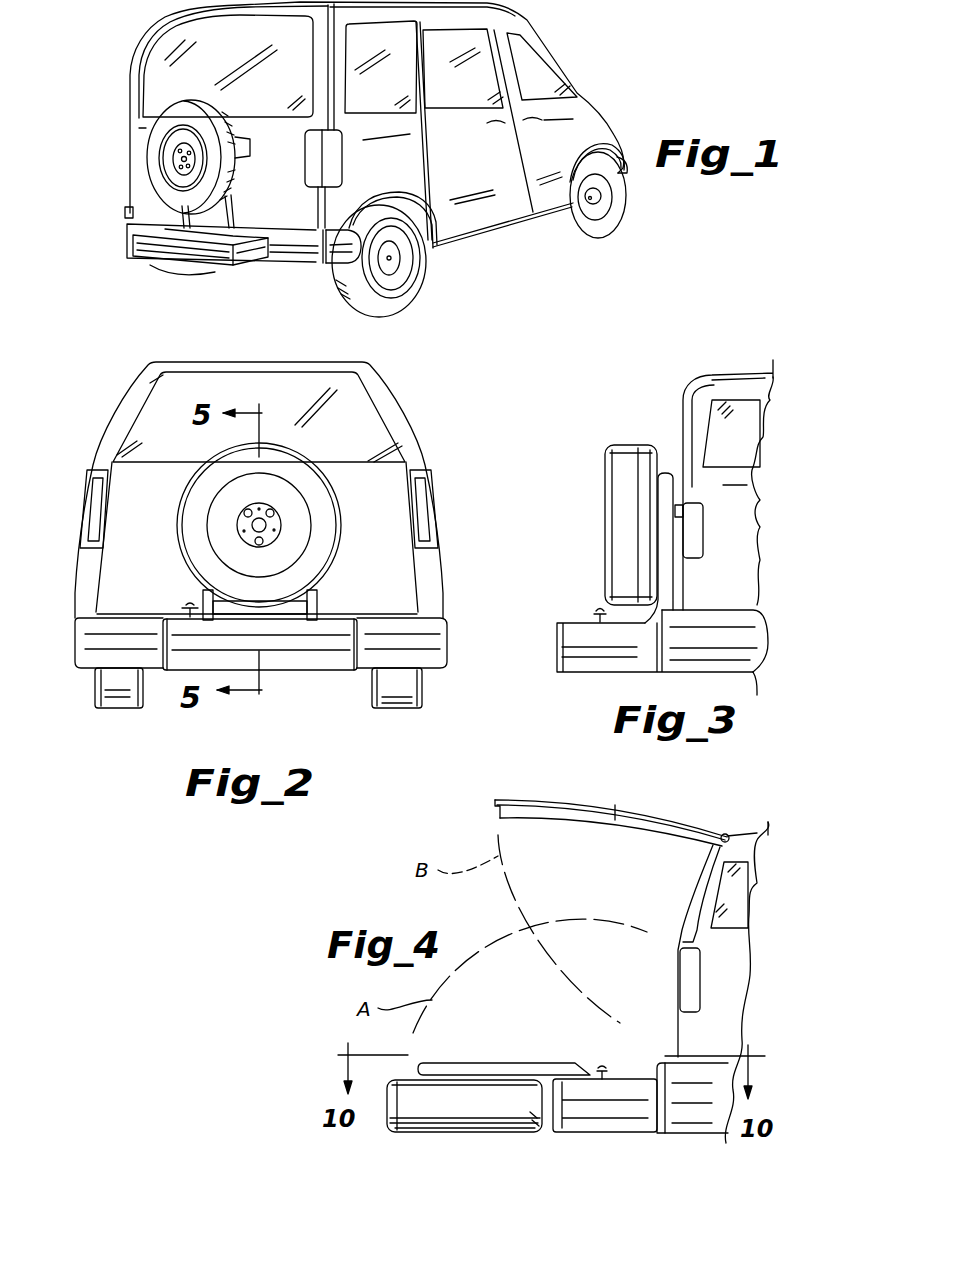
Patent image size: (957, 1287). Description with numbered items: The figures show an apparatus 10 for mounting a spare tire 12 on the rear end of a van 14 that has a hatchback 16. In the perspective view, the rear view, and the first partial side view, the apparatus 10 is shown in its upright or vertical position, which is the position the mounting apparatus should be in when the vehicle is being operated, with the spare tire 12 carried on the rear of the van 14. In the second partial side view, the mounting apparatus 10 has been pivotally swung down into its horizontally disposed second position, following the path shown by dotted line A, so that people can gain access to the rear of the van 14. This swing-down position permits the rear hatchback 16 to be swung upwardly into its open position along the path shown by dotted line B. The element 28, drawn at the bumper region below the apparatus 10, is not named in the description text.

In FIG. 1, the spare tire carrier bracket 10 is at (247, 233).
In FIG. 2, the spare tire carrier bracket 10 is at (315, 600).
In FIG. 3, the spare tire carrier bracket 10 is at (663, 473).
In FIG. 4, the spare tire carrier bracket 10 is at (513, 1063).
In FIG. 1, the spare tire 12 is at (147, 175).
In FIG. 2, the spare tire 12 is at (337, 520).
In FIG. 3, the spare tire 12 is at (617, 500).
In FIG. 4, the spare tire 12 is at (422, 1117).
In FIG. 1, the vehicle (van) 14 is at (565, 68).
In FIG. 2, the vehicle (van) 14 is at (420, 443).
In FIG. 3, the vehicle (van) 14 is at (743, 539).
In FIG. 4, the vehicle (van) 14 is at (720, 963).
In FIG. 1, the rear lift gate 16 is at (126, 122).
In FIG. 2, the rear lift gate 16 is at (147, 573).
In FIG. 4, the rear lift gate 16 is at (515, 800).
In FIG. 1, the rear bumper 28 is at (203, 256).
In FIG. 2, the rear bumper 28 is at (182, 657).
In FIG. 3, the rear bumper 28 is at (588, 652).
In FIG. 4, the rear bumper 28 is at (628, 1093).